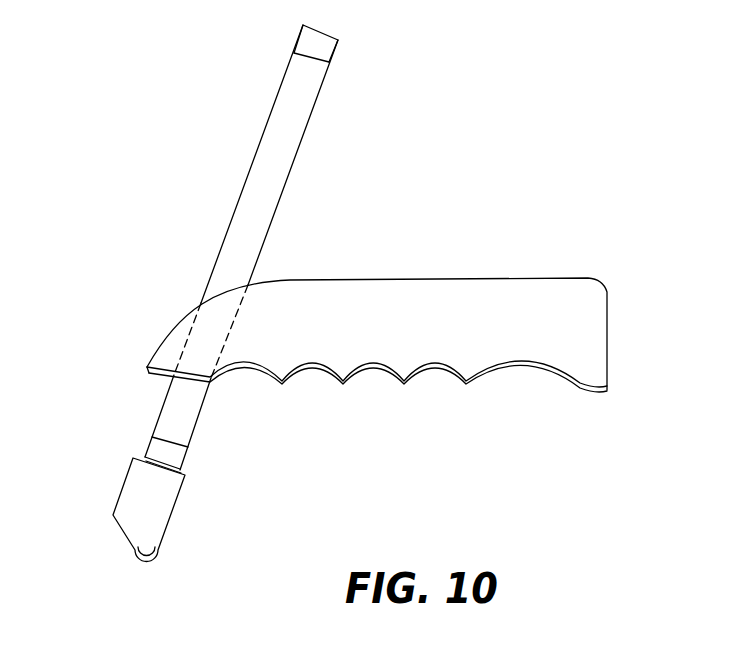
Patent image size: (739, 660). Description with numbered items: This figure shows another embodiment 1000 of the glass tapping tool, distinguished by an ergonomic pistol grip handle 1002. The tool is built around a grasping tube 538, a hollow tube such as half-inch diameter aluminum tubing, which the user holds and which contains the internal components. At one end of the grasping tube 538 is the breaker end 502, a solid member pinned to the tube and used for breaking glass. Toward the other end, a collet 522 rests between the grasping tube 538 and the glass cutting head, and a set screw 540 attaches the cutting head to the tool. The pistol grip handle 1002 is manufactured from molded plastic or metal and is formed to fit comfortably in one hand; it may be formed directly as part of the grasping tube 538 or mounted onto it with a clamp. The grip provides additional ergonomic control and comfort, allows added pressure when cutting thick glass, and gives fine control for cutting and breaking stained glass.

The embodiment of glass tapping tool 1000 is at (530, 527).
The pistol grip handle 1002 is at (463, 278).
The breaker end 502 is at (298, 39).
The grasping tube 538 is at (240, 197).
The collet 522 is at (187, 460).
The set screw 540 is at (125, 533).